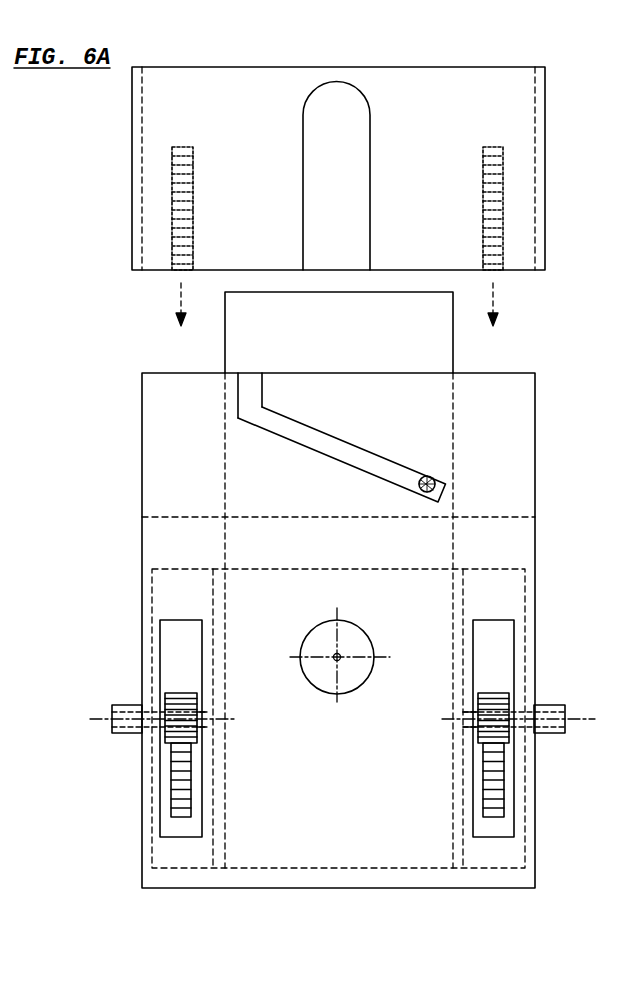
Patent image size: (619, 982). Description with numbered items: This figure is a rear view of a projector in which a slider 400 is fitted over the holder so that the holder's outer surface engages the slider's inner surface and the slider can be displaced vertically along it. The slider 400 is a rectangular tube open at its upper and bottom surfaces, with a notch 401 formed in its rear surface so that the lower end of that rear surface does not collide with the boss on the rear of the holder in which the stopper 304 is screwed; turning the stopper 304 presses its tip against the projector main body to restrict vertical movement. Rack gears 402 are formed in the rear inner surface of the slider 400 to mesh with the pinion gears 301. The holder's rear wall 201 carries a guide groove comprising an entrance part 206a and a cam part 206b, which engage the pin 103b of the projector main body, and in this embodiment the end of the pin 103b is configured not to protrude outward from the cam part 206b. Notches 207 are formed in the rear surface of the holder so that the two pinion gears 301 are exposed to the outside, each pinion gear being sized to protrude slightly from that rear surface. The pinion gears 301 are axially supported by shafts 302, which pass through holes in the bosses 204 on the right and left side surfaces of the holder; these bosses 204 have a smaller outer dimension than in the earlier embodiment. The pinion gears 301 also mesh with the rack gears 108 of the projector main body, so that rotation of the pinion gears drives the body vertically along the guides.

The slider 400 is at (143, 278).
The notch 401 is at (349, 158).
The rack gears 402 is at (188, 222).
The wall 201 is at (527, 425).
The entrance part 206a is at (252, 377).
The cam part 206b is at (328, 447).
The pin 103b is at (432, 477).
The notches 207 is at (172, 648).
The pinion gears 301 is at (175, 695).
The shafts 302 is at (210, 707).
The stopper 304 is at (355, 678).
The rack gears 108 is at (185, 788).
The bosses 204 is at (132, 735).